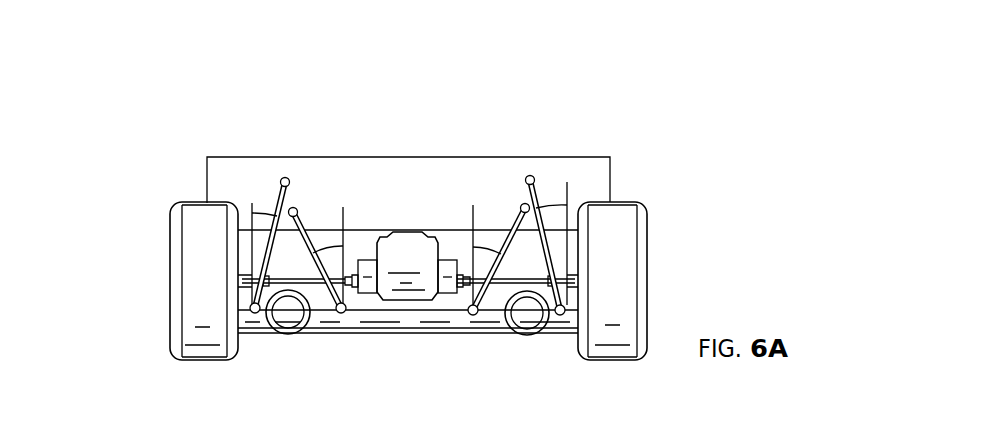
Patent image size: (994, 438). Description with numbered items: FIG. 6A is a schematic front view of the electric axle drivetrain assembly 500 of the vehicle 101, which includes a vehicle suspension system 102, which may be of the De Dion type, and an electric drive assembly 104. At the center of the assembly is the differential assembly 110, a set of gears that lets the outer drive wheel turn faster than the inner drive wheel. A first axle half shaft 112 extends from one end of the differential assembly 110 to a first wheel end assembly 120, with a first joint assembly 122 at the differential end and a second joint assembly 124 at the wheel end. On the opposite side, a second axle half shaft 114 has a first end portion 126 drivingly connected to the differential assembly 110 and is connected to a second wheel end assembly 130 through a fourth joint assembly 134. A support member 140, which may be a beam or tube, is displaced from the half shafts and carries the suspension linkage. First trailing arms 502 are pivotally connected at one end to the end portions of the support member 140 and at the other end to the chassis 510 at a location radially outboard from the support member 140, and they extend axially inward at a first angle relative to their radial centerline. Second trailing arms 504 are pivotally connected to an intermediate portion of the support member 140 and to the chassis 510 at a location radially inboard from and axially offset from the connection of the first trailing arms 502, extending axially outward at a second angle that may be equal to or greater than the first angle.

The electric axle drivetrain assembly 500 is at (577, 80).
The vehicle 101 is at (637, 82).
The vehicle suspension system 102 is at (630, 130).
The electric drive assembly 104 is at (405, 188).
The chassis 510 is at (248, 194).
The differential assembly 110 is at (407, 266).
The first axle half shaft 112 is at (313, 307).
The second axle half shaft 114 is at (498, 307).
The first wheel end assembly 120 is at (135, 337).
The first joint assembly 122 is at (357, 301).
The second joint assembly 124 is at (203, 278).
The first end portion of the second axle half shaft 126 is at (447, 302).
The second wheel end assembly 130 is at (687, 297).
The fourth joint assembly 134 is at (583, 278).
The support member 140 is at (405, 323).
The first trailing arms 502 is at (240, 280).
The second trailing arms 504 is at (305, 218).